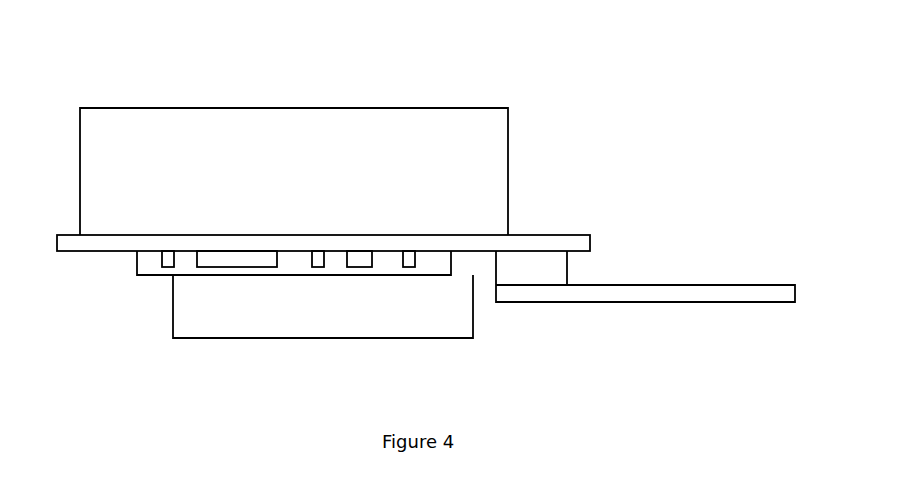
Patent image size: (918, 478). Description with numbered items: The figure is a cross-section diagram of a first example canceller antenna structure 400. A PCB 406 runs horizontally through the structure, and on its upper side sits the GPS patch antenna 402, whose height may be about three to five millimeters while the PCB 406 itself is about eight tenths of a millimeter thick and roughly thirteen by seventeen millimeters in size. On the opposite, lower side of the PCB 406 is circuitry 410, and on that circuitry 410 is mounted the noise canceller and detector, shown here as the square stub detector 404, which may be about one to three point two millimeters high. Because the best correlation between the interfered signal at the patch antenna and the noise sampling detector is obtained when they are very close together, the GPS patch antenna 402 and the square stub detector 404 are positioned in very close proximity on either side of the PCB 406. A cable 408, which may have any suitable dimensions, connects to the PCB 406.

The canceller antenna structure 400 is at (676, 25).
The GPS patch antenna 402 is at (294, 171).
The square stub detector 404 is at (323, 306).
The PCB 406 is at (561, 243).
The cable 408 is at (595, 293).
The circuitry 410 is at (143, 263).